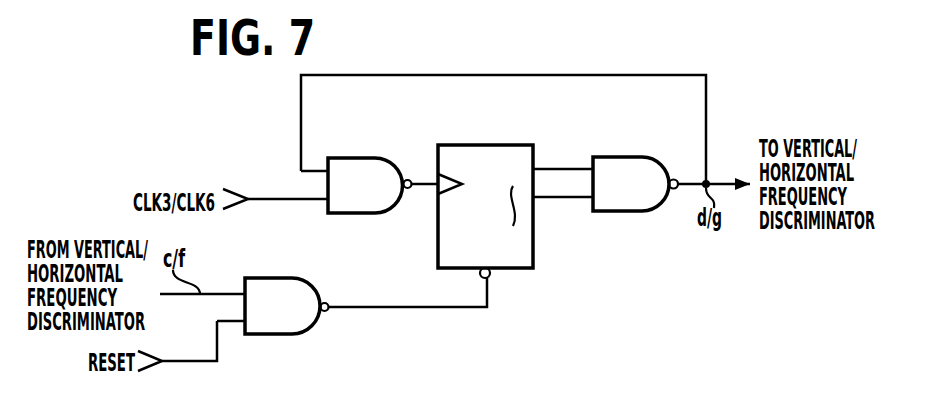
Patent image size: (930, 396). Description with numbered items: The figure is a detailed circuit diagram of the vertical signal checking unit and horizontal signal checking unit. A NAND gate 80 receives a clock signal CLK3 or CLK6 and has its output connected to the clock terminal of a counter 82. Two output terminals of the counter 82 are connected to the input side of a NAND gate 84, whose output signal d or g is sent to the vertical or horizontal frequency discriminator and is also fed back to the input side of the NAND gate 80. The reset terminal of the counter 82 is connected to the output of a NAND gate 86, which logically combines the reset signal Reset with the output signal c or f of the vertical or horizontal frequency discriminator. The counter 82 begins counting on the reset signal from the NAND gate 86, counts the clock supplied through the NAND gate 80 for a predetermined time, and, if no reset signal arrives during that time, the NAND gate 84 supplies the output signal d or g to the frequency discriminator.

The NAND gate 80 is at (365, 158).
The counter 82 is at (487, 145).
The NAND gate 84 is at (630, 157).
The NAND gate 86 is at (290, 334).